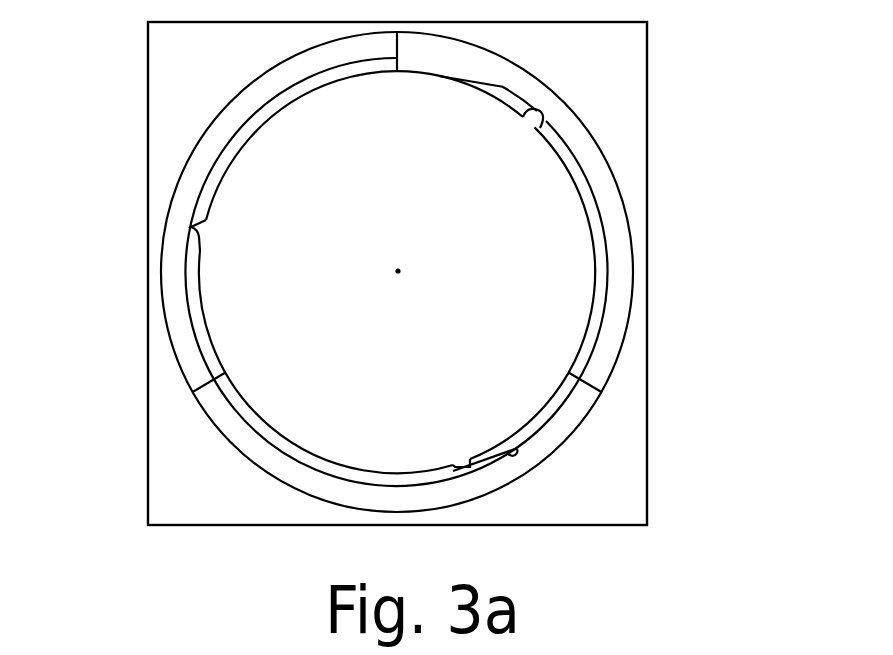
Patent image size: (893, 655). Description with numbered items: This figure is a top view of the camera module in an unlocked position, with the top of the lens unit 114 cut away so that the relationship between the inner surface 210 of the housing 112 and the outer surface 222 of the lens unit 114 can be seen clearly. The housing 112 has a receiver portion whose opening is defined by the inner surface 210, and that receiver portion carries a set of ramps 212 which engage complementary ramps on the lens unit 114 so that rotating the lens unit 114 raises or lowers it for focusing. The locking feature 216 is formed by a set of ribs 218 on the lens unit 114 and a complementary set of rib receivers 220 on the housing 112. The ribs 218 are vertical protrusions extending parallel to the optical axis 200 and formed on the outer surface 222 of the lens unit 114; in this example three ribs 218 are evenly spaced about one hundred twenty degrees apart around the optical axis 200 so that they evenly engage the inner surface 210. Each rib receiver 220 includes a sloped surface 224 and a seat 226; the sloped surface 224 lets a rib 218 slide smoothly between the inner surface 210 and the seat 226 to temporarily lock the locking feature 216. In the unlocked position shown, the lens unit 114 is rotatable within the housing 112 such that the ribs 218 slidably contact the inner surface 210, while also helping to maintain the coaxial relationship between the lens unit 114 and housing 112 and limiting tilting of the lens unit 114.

The housing 112 is at (600, 92).
The lens unit 114 is at (242, 312).
The optical axis 200 is at (397, 271).
The inner surface 210 is at (610, 273).
The ramps 212 is at (203, 150).
The locking feature 216 is at (535, 138).
The ribs 218 is at (472, 472).
The rib receivers 220 is at (594, 423).
The outer surface 222 is at (212, 193).
The sloped surface 224 is at (508, 451).
The seat 226 is at (555, 403).